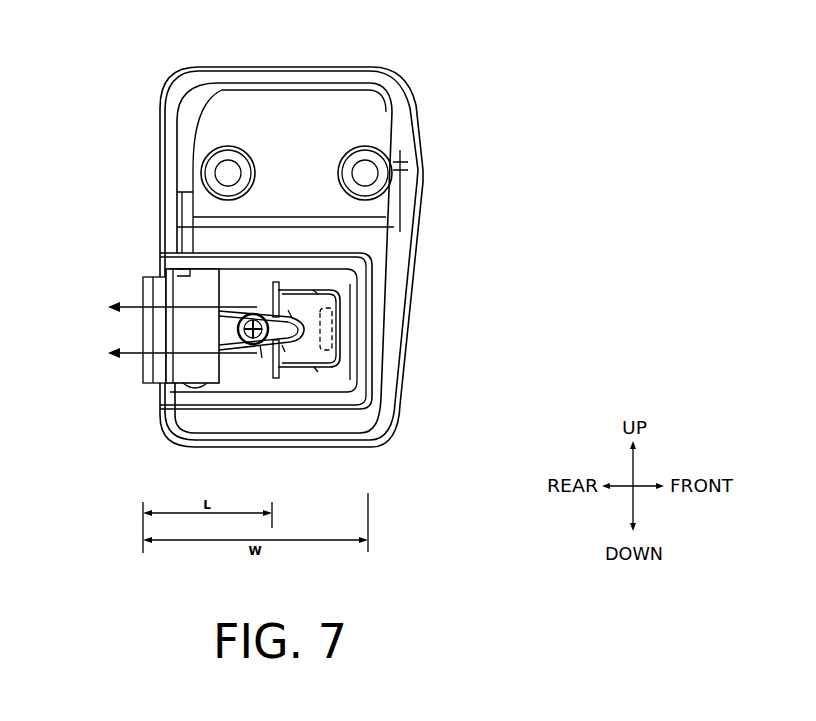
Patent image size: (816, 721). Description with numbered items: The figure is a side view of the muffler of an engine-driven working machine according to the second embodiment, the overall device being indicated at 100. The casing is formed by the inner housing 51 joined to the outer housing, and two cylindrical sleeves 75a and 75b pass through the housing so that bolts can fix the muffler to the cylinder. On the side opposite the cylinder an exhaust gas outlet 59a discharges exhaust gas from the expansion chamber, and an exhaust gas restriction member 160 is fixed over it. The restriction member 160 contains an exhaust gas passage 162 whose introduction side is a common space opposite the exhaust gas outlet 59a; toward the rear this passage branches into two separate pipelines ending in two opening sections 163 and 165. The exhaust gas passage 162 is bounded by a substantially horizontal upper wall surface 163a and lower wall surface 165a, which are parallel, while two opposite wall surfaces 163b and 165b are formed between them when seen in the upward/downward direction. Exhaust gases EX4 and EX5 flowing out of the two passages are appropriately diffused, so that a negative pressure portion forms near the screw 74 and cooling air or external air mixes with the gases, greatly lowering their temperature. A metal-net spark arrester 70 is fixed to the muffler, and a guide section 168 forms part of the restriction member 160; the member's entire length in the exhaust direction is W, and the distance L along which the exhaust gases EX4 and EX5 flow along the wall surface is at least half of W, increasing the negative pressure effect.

The vehicle door handle device 100 is at (432, 44).
The inner housing 51 is at (275, 108).
The cylindrical sleeve 75a is at (380, 155).
The cylindrical sleeve 75b is at (208, 162).
The exhaust gas restriction member 160 is at (357, 277).
The exhaust gas passage 162 is at (327, 370).
The exhaust gas outlet 59a is at (333, 328).
The opening section 163 is at (270, 297).
The upper wall surface 163a is at (315, 286).
The opposite wall surface 163b is at (289, 306).
The opening section 165 is at (263, 358).
The lower wall surface 165a is at (316, 372).
The opposite wall surface 165b is at (284, 352).
The screw 74 is at (250, 320).
The spark arrester 70 is at (190, 366).
The guide section 168 is at (147, 380).
The exhaust gas EX4 is at (163, 307).
The exhaust gas EX5 is at (163, 353).